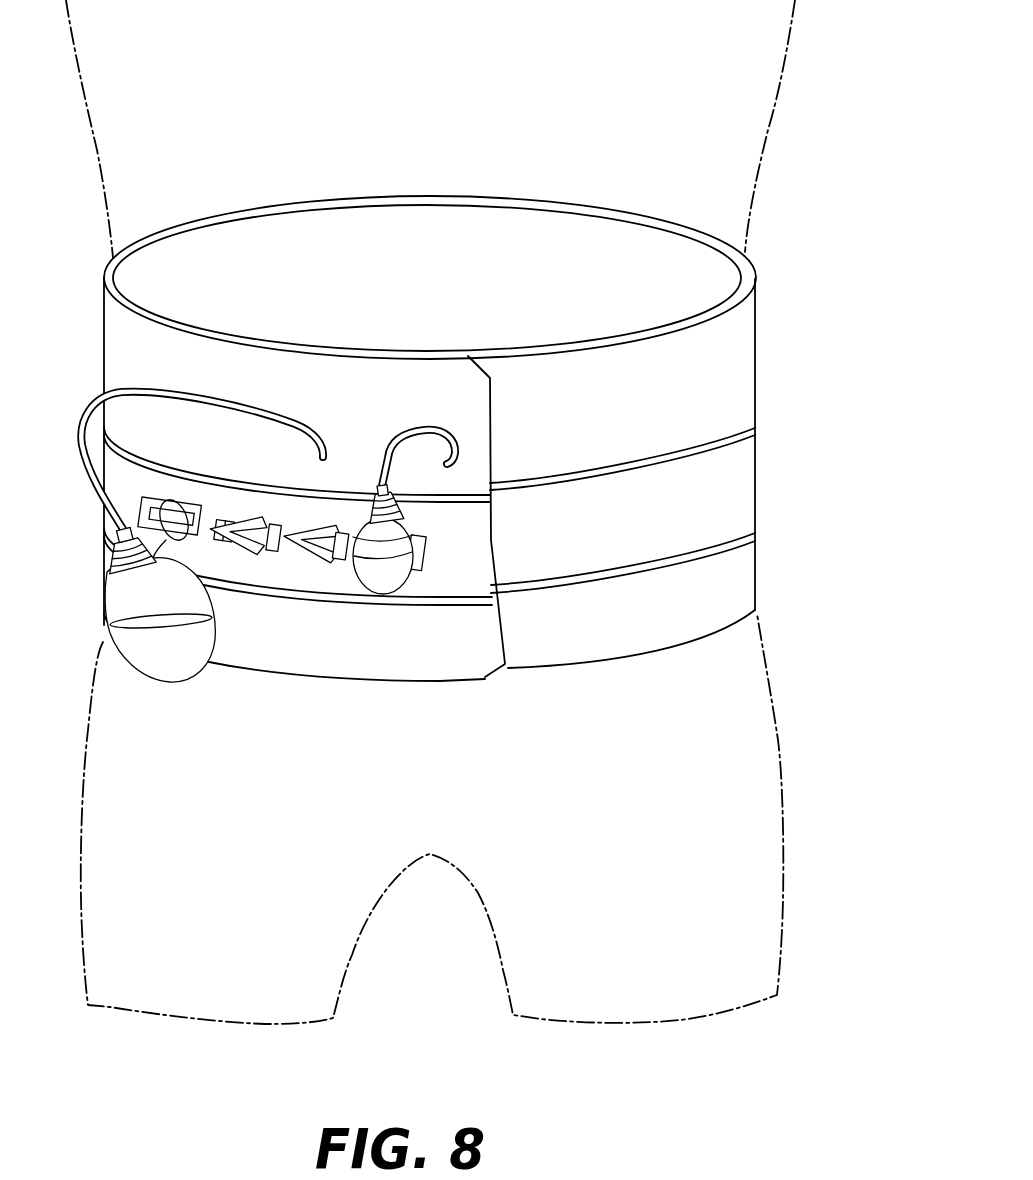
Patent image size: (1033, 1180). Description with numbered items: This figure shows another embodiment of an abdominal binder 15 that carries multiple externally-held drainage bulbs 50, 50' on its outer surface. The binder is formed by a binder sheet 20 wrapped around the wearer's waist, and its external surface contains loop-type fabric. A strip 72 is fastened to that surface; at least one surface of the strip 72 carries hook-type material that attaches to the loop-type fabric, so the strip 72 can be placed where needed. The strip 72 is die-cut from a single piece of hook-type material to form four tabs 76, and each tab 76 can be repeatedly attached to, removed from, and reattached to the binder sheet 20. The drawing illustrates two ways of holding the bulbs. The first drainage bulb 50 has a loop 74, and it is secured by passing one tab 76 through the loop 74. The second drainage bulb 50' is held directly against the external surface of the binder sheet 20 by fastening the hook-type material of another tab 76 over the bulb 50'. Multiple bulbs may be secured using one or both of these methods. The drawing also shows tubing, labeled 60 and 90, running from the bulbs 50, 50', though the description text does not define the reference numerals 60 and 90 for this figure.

The abdominal binder 15 is at (861, 148).
The binder sheet 20 is at (793, 353).
The fluid tube 60 is at (80, 420).
The tube connector 90 is at (463, 460).
The strip 72 is at (427, 549).
The loop 74 is at (178, 498).
The tabs 76 is at (209, 530).
The drainage bulb 50 is at (157, 602).
The drainage bulb 50' is at (396, 569).